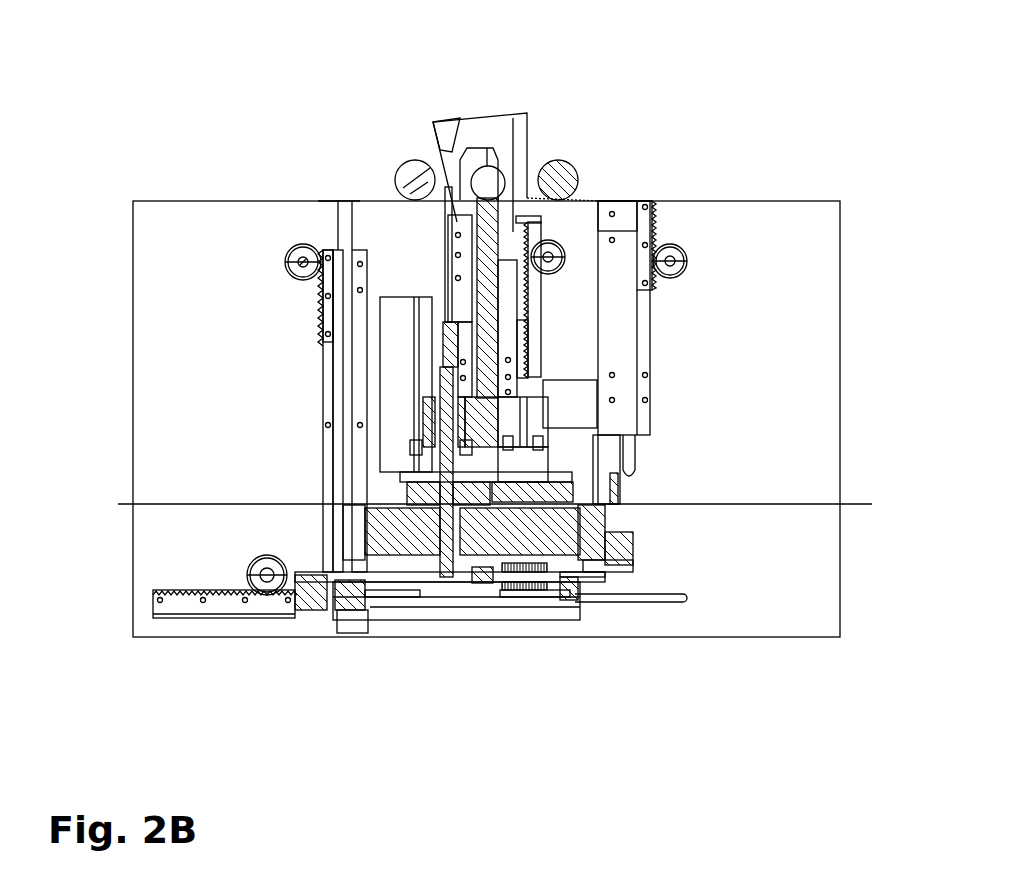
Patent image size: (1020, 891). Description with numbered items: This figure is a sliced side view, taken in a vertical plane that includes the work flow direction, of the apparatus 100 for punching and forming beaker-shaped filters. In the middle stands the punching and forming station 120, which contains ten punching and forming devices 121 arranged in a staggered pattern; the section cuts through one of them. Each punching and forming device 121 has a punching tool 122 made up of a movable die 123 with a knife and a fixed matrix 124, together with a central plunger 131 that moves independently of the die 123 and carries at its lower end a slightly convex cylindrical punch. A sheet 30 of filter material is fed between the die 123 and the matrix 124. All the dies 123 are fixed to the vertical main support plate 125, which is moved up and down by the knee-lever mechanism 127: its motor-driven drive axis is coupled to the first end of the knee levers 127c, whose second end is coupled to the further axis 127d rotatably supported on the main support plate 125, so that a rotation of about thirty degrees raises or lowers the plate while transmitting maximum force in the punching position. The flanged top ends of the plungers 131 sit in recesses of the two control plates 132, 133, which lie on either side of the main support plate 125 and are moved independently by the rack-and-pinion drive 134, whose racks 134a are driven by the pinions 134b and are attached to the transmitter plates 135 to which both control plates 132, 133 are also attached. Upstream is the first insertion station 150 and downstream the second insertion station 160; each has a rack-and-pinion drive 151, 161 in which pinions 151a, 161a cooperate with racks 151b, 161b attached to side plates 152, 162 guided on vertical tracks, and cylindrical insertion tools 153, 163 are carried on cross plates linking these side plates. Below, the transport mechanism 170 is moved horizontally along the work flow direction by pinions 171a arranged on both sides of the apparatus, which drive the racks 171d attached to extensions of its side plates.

The sheet of filter material 30 is at (148, 500).
The apparatus 100 is at (812, 654).
The punching and forming station 120 is at (538, 220).
The punching and forming device 121 is at (472, 538).
The punching tool 122 is at (590, 487).
The movable die 123 is at (412, 490).
The fixed matrix 124 is at (402, 498).
The main support plate 125 is at (507, 353).
The knee-lever mechanism 127 is at (472, 90).
The knee lever 127c is at (453, 143).
The further axis 127d is at (490, 178).
The central plunger 131 is at (447, 408).
The control plate 132 is at (447, 342).
The control plate 133 is at (523, 340).
The rack-and-pinion drive 134 is at (655, 255).
The rack 134a is at (537, 328).
The pinion 134b is at (552, 242).
The transmitter plate 135 is at (482, 278).
The first insertion station 150 is at (312, 196).
The rack-and-pinion drive 151 is at (296, 360).
The pinion 151a is at (290, 258).
The rack 151b is at (327, 252).
The side plate 152 is at (328, 400).
The insertion tool 153 is at (360, 612).
The second insertion station 160 is at (684, 192).
The rack-and-pinion drive 161 is at (672, 330).
The pinion 161a is at (680, 270).
The rack 161b is at (653, 222).
The side plate 162 is at (623, 217).
The insertion tool 163 is at (628, 553).
The transport mechanism 170 is at (560, 640).
The pinion 171a is at (265, 582).
The rack 171d is at (195, 600).